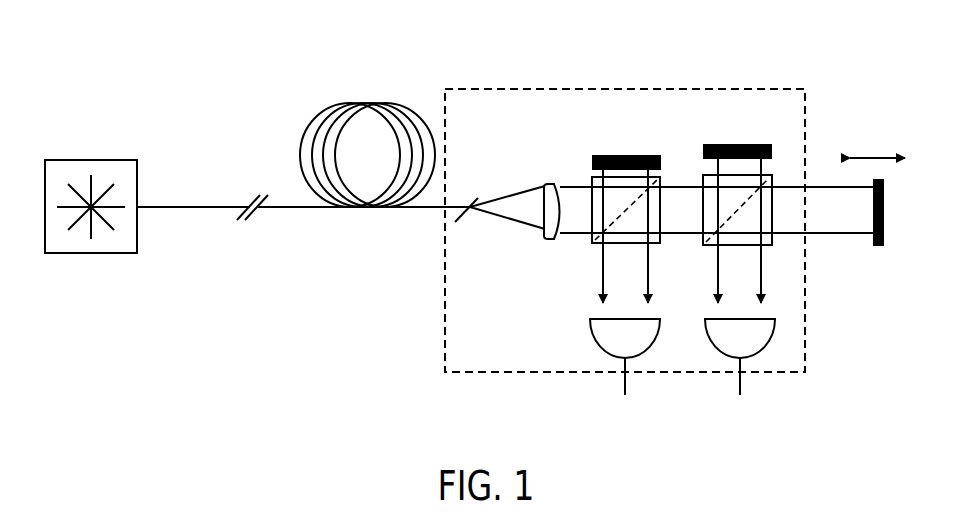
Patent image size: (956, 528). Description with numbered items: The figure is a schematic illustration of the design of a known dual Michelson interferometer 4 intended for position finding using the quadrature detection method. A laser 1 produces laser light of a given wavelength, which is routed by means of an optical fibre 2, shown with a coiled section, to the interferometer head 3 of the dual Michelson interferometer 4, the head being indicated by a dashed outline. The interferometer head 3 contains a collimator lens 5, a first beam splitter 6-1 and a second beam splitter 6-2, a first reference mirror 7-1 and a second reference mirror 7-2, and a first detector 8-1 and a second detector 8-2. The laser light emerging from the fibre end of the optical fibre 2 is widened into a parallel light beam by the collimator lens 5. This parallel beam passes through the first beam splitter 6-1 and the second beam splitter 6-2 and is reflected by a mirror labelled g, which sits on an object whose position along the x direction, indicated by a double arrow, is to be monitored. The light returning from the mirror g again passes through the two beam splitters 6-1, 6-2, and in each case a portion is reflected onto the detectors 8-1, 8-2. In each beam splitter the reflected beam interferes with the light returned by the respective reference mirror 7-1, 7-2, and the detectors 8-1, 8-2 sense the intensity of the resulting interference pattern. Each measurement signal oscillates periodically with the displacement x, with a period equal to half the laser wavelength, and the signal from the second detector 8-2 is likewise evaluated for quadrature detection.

The laser 1 is at (82, 160).
The optical fibre 2 is at (289, 207).
The interferometer head 3 is at (586, 88).
The dual Michelson interferometer 4 is at (270, 74).
The collimator lens 5 is at (552, 183).
The first beam splitter 6-1 is at (595, 243).
The second beam splitter 6-2 is at (770, 245).
The first reference mirror 7-1 is at (645, 156).
The second reference mirror 7-2 is at (735, 145).
The first detector 8-1 is at (592, 336).
The second detector 8-2 is at (708, 336).
The movable mirror / object g is at (883, 230).
The x direction x is at (877, 144).